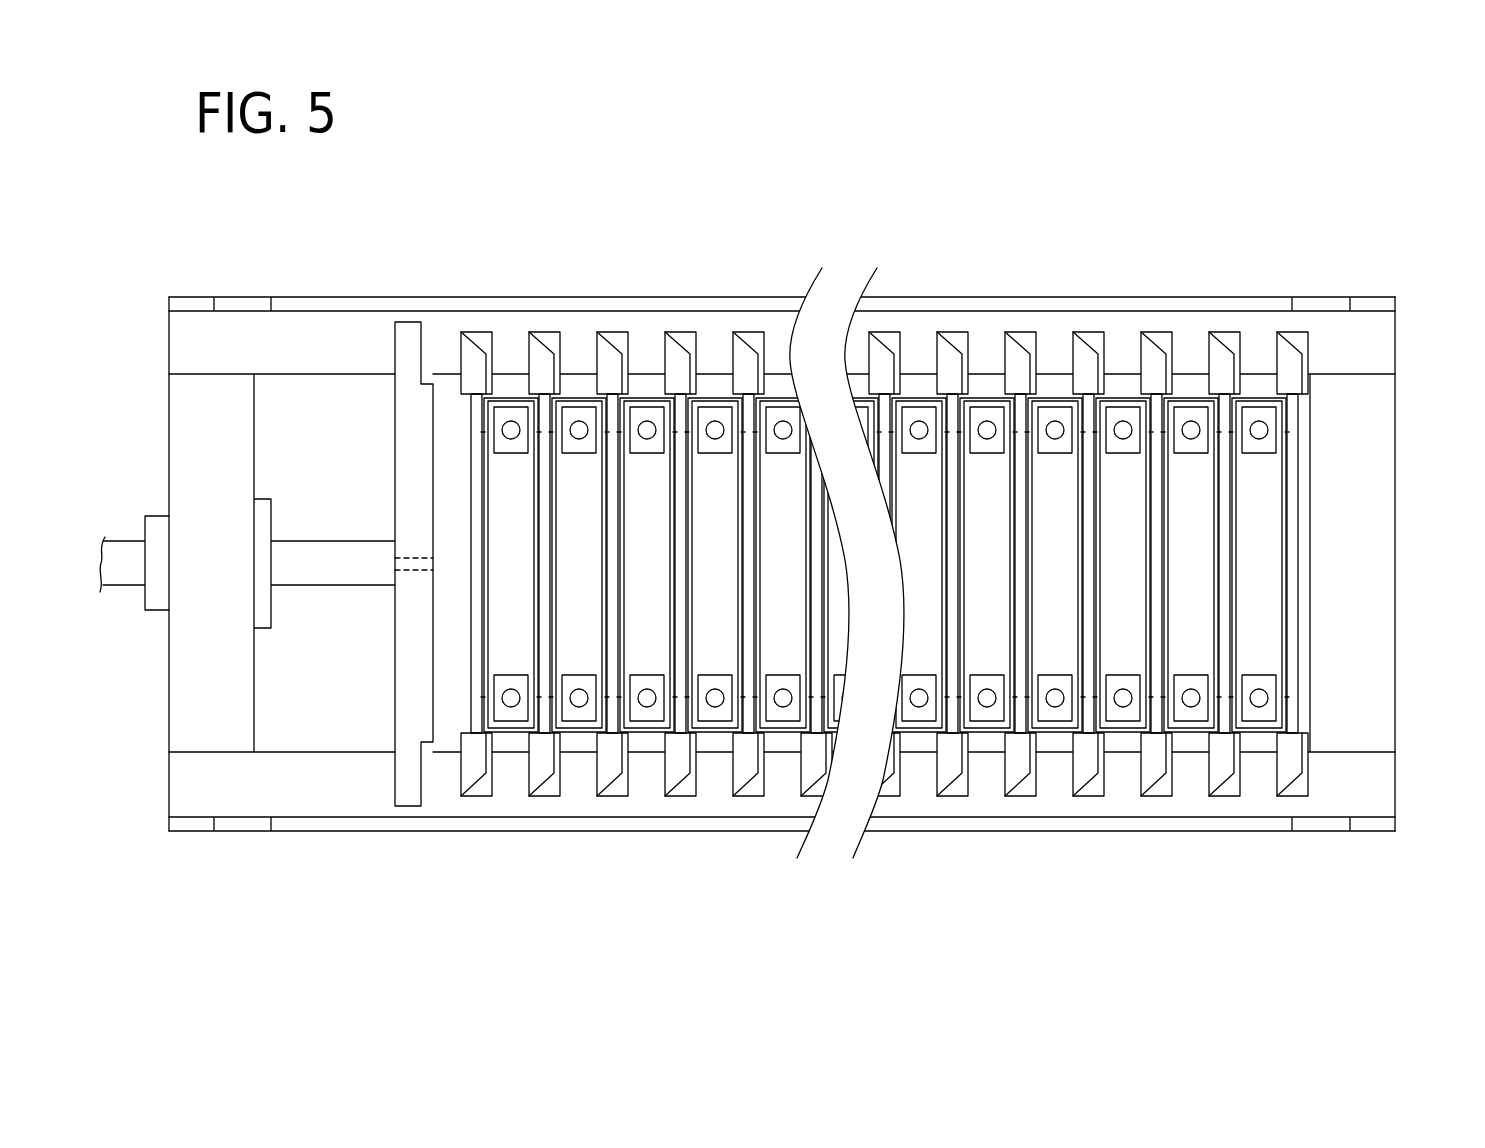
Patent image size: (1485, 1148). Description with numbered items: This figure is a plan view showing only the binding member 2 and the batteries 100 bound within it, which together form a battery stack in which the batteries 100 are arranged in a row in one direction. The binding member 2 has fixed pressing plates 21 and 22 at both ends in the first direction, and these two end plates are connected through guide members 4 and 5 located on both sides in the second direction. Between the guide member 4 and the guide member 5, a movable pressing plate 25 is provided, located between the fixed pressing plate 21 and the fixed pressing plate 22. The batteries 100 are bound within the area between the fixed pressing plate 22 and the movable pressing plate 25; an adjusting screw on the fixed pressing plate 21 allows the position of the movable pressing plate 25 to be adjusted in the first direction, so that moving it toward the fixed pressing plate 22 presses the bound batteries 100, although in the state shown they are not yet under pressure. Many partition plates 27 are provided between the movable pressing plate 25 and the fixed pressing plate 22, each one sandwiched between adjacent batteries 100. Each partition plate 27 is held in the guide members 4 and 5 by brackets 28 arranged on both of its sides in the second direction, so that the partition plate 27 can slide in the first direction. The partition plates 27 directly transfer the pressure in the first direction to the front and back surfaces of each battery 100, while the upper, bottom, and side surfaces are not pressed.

The binding member 2 is at (1255, 230).
The guide member 4 is at (1070, 300).
The guide member 5 is at (1163, 830).
The fixed pressing plate 21 is at (200, 433).
The fixed pressing plate 22 is at (1353, 518).
The movable pressing plate 25 is at (400, 413).
The partition plate 27 is at (1023, 593).
The bracket 28 is at (742, 360).
The battery 100 is at (1122, 545).